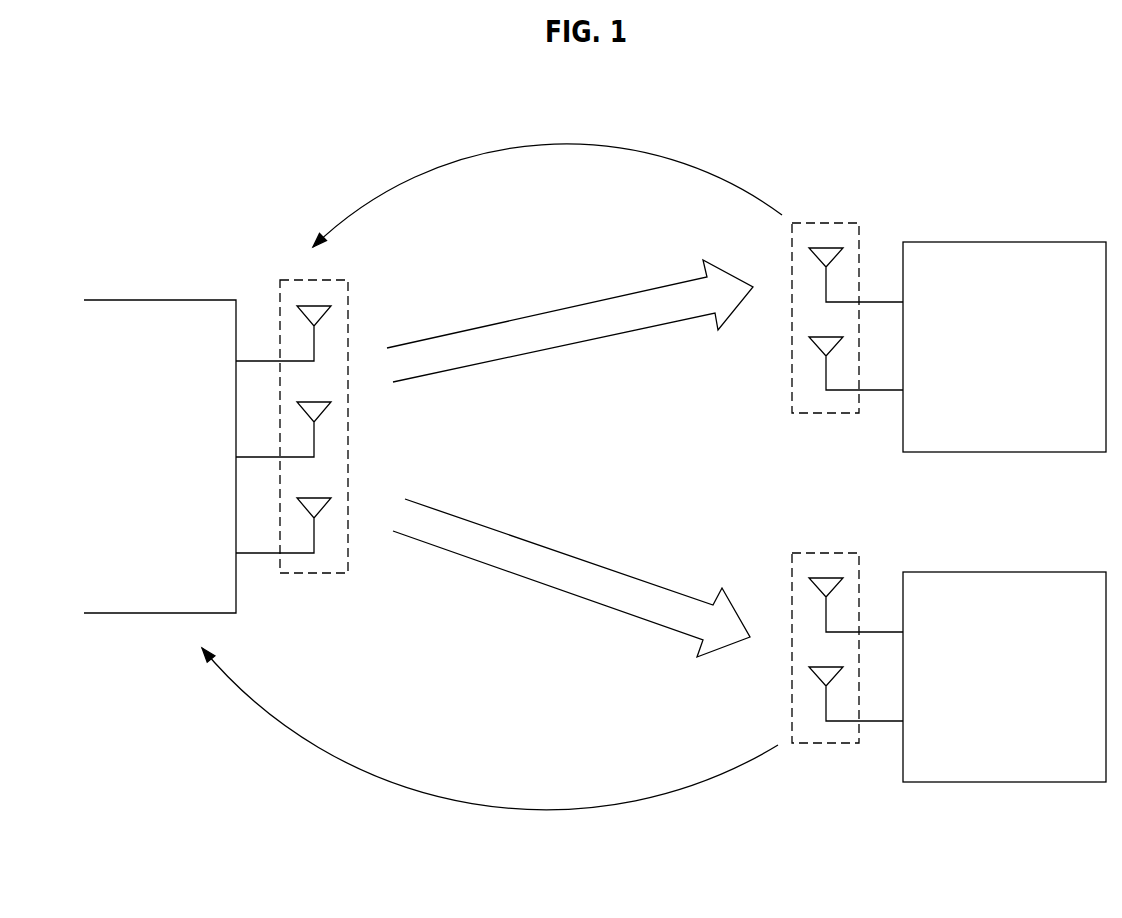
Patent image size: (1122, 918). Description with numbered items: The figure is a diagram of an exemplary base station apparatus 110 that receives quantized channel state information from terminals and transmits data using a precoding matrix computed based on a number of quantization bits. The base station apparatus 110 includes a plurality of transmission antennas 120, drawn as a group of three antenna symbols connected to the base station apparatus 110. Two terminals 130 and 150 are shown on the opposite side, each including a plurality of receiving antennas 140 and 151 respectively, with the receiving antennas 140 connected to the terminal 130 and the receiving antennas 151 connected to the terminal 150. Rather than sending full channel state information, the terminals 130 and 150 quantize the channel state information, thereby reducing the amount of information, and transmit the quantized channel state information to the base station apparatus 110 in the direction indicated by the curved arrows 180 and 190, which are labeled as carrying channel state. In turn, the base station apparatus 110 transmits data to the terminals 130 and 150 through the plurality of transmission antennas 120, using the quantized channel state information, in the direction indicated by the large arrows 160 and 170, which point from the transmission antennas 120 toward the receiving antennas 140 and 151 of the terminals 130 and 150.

The base station apparatus 110 is at (159, 300).
The transmission antennas 120 is at (314, 280).
The terminal 130 is at (1003, 242).
The receiving antennas 140 is at (826, 223).
The terminal 150 is at (1003, 572).
The receiving antennas 151 is at (826, 553).
The arrow 160 is at (545, 310).
The arrow 170 is at (560, 555).
The arrow 180 is at (625, 110).
The arrow 190 is at (590, 845).